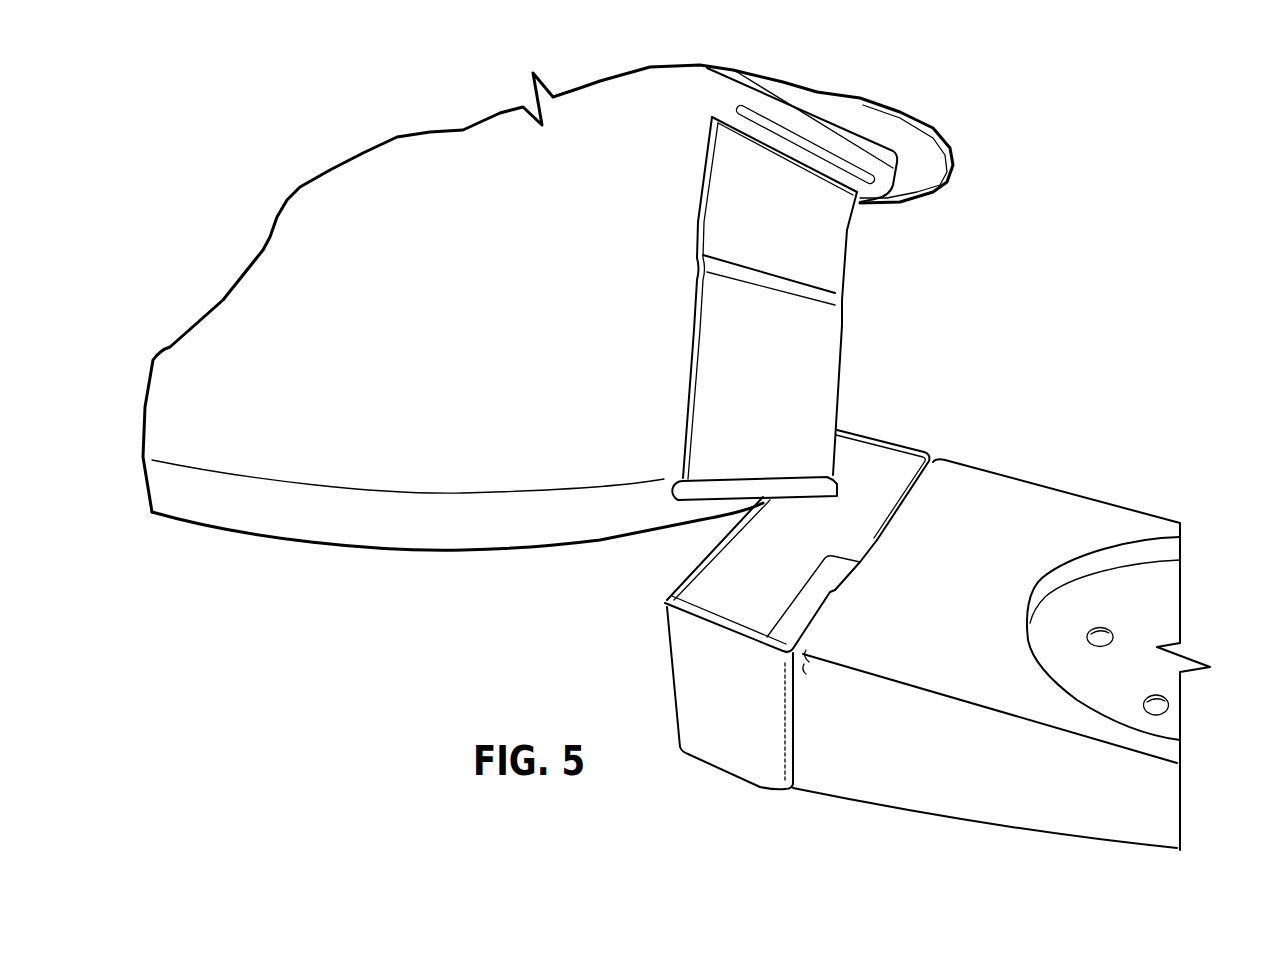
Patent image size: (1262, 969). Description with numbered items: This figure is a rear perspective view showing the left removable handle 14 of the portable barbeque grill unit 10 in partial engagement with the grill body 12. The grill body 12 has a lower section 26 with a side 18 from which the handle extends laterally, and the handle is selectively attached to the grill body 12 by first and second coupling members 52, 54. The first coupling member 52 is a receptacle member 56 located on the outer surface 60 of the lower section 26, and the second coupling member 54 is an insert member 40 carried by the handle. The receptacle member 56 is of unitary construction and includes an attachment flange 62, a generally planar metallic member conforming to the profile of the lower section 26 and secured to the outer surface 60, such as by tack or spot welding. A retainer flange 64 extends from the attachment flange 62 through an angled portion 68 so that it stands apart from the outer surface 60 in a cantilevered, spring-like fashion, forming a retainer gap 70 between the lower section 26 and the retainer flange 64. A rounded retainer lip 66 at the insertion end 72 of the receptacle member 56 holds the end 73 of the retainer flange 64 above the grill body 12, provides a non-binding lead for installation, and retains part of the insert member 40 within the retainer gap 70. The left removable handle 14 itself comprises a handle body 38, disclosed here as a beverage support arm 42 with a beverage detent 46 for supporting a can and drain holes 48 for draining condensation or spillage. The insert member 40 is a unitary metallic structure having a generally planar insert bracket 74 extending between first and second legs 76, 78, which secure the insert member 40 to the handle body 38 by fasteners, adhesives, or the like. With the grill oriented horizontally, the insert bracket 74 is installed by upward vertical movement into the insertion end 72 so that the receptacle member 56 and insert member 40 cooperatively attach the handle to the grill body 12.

The portable barbeque grill unit 10 is at (348, 590).
The grill body 12 is at (276, 215).
The left removable handle 14 is at (1052, 485).
The side 18 is at (590, 427).
The lower section 26 is at (310, 507).
The handle body 38 is at (930, 790).
The insert member 40 is at (922, 443).
The beverage support arm 42 is at (987, 507).
The beverage detent 46 is at (1140, 603).
The drain holes 48 is at (1113, 645).
The first coupling member 52 is at (845, 367).
The second coupling member 54 is at (757, 786).
The receptacle member 56 is at (745, 226).
The outer surface 60 is at (407, 220).
The attachment flange 62 is at (830, 227).
The retainer flange 64 is at (803, 347).
The retainer lip 66 is at (702, 501).
The angled portion 68 is at (732, 270).
The retainer gap 70 is at (687, 358).
The insertion end 72 is at (790, 500).
The end 73 is at (730, 476).
The insert bracket 74 is at (680, 580).
The first leg 76 is at (863, 463).
The second leg 78 is at (710, 690).